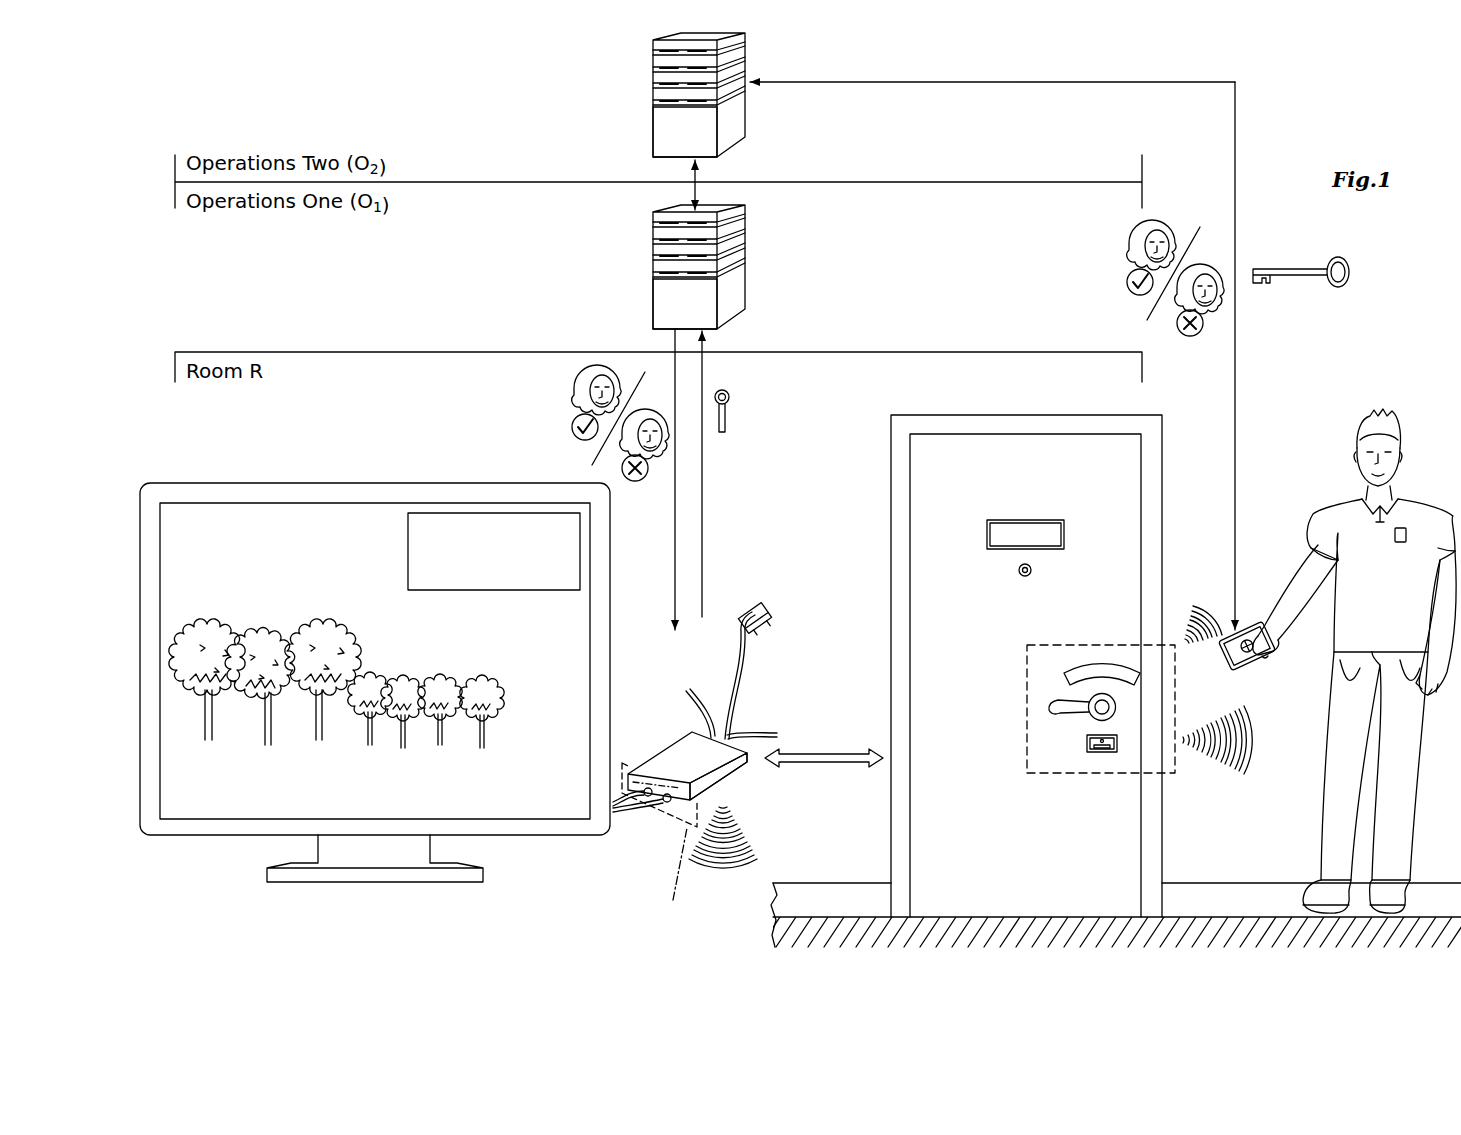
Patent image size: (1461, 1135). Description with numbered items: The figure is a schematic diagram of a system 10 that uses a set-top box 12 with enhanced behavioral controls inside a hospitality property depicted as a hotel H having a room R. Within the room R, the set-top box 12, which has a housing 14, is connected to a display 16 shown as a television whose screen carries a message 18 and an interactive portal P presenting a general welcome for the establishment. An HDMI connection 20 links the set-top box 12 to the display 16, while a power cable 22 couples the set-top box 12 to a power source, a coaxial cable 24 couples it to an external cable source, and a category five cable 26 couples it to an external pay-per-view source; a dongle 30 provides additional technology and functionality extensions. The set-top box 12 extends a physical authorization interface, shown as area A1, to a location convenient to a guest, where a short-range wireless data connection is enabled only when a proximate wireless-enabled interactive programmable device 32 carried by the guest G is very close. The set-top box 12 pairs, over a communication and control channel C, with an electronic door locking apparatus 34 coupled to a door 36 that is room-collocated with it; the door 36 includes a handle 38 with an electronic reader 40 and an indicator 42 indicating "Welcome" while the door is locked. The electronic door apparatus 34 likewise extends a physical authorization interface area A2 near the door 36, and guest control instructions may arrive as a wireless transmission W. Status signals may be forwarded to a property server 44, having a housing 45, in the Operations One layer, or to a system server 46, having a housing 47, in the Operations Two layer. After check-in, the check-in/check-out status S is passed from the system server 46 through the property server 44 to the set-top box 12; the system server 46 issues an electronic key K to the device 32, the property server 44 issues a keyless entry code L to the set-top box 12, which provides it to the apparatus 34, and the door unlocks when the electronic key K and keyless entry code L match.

The system 10 is at (718, 721).
The set-top box 12 is at (650, 767).
The housing 14 is at (737, 775).
The display 16 is at (353, 636).
The message 18 is at (521, 513).
The HDMI connection 20 is at (640, 810).
The power cable 22 is at (620, 813).
The coaxial cable 24 is at (693, 693).
The category five (Cat 5) cable 26 is at (755, 730).
The dongle 30 is at (765, 604).
The proximate wireless-enabled interactive programmable device 32 is at (1262, 668).
The electronic door locking apparatus 34 is at (616, 408).
The door 36 is at (1163, 437).
The handle 38 is at (1064, 701).
The electronic reader 40 is at (1100, 752).
The indicator 42 is at (1098, 661).
The property server 44 is at (757, 228).
The housing 45 is at (652, 265).
The system server 46 is at (757, 58).
The housing 47 is at (652, 95).
The physical authorization interface area A1 is at (742, 828).
The physical authorization interface area A2 is at (1247, 754).
The communication and control channel C is at (820, 690).
The guest G is at (1428, 503).
The hotel H is at (770, 322).
The electronic key K is at (1350, 270).
The keyless entry code L is at (728, 412).
The interactive portal P is at (170, 793).
The room R is at (416, 475).
The check-in/check-out status S is at (1127, 250).
The wireless transmission W is at (1190, 618).